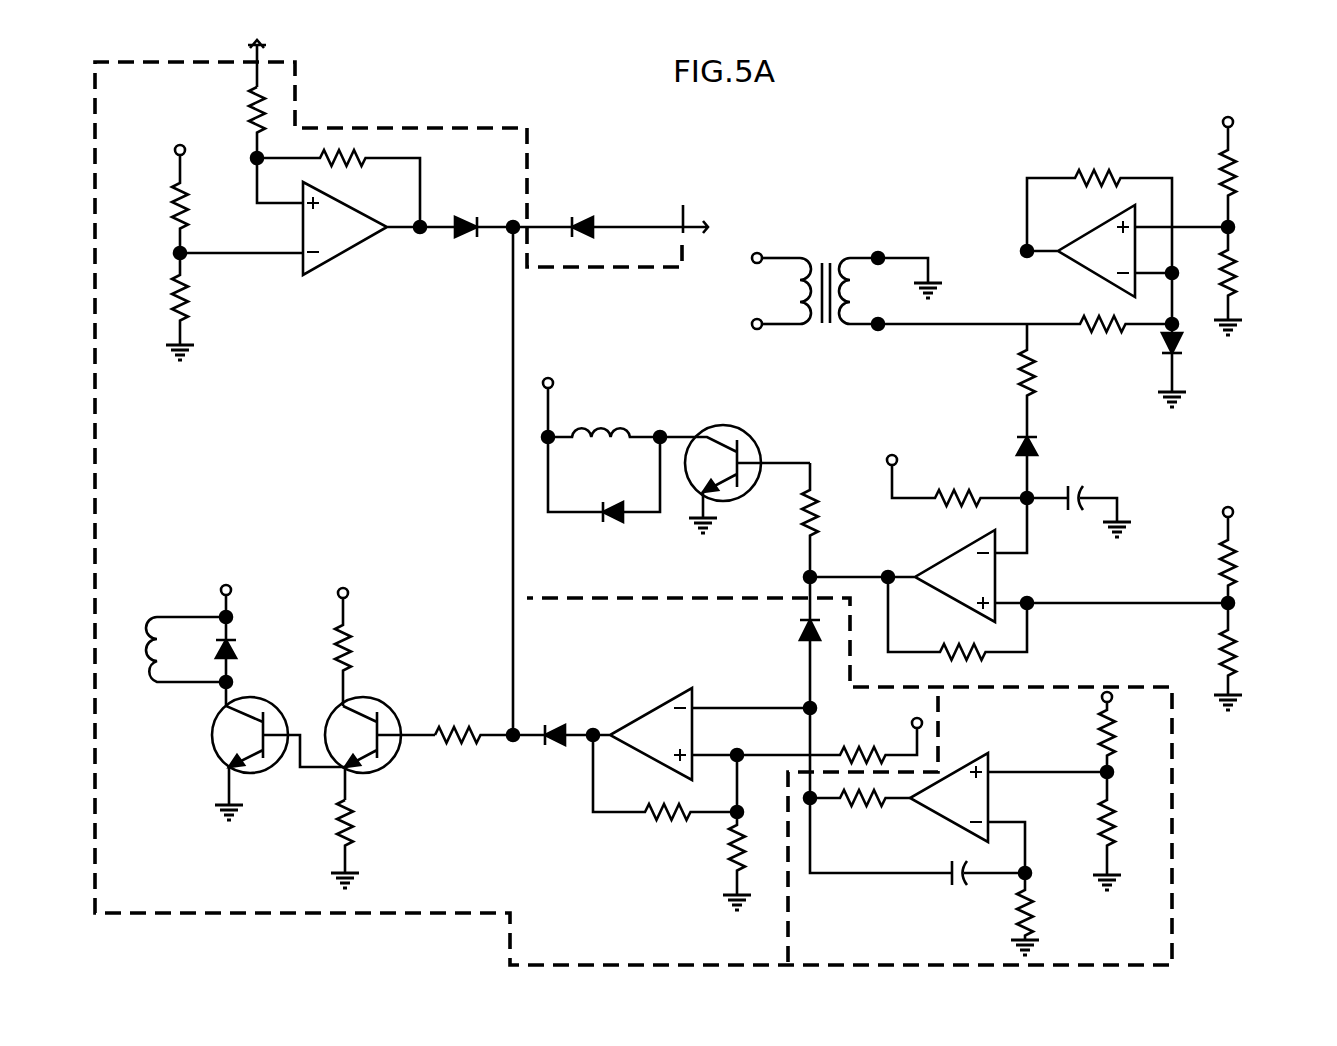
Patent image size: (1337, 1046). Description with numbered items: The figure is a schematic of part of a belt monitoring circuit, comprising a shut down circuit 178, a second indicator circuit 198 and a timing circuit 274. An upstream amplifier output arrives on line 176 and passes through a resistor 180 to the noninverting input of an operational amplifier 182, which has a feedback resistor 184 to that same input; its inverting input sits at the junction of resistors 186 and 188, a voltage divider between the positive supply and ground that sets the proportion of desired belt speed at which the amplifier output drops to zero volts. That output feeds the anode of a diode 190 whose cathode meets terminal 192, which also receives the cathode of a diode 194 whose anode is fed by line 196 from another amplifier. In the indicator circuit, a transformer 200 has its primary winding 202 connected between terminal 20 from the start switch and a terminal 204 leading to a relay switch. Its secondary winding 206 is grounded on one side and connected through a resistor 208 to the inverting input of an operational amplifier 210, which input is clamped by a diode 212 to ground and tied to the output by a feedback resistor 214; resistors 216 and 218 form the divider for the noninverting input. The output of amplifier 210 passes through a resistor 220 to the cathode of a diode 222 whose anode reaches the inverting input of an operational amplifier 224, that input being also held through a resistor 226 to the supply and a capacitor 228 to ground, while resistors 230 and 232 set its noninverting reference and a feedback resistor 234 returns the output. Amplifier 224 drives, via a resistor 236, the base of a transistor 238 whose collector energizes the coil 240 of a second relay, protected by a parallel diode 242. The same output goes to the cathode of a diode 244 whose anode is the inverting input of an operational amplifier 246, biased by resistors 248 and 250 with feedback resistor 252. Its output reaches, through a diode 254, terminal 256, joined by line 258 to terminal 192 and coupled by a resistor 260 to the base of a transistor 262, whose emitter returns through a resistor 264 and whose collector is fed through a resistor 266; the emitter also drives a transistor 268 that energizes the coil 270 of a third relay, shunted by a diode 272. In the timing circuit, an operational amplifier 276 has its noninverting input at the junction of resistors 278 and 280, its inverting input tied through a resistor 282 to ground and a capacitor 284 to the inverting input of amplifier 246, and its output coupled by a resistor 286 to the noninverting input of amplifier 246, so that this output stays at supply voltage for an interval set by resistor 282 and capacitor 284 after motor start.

The terminal 20 is at (752, 325).
The line 176 is at (255, 52).
The shut down circuit 178 is at (356, 130).
The resistor 180 is at (255, 110).
The operational amplifier 182 is at (340, 262).
The feedback resistor 184 is at (355, 158).
The resistor 186 is at (178, 200).
The resistor 188 is at (178, 298).
The diode 190 is at (465, 218).
The terminal 192 is at (513, 225).
The diode 194 is at (585, 217).
The line 196 is at (637, 225).
The second indicator circuit 198 is at (652, 318).
The transformer 200 is at (811, 262).
The primary winding 202 is at (795, 290).
The terminal 204 is at (760, 252).
The secondary winding 206 is at (829, 263).
The resistor 208 is at (1100, 326).
The operational amplifier 210 is at (1078, 238).
The diode 212 is at (1182, 342).
The feedback resistor 214 is at (1098, 178).
The resistor 216 is at (1238, 180).
The resistor 218 is at (1238, 262).
The resistor 220 is at (1040, 385).
The diode 222 is at (1040, 450).
The operational amplifier 224 is at (942, 585).
The resistor 226 is at (955, 493).
The capacitor 228 is at (1075, 508).
The resistor 230 is at (1235, 550).
The resistor 232 is at (1236, 648).
The feedback resistor 234 is at (985, 655).
The resistor 236 is at (822, 505).
The transistor 238 is at (735, 495).
The coil 240 is at (592, 440).
The diode 242 is at (615, 525).
The diode 244 is at (800, 628).
The operational amplifier 246 is at (640, 714).
The resistor 248 is at (858, 752).
The resistor 250 is at (735, 850).
The feedback resistor 252 is at (648, 818).
The diode 254 is at (558, 728).
The terminal 256 is at (513, 748).
The line 258 is at (512, 645).
The resistor 260 is at (458, 728).
The transistor 262 is at (330, 770).
The resistor 264 is at (355, 815).
The resistor 266 is at (350, 630).
The transistor 268 is at (212, 748).
The coil 270 is at (158, 635).
The diode 272 is at (243, 645).
The timing circuit 274 is at (788, 926).
The operational amplifier 276 is at (990, 785).
The resistor 278 is at (1100, 745).
The resistor 280 is at (1113, 822).
The resistor 282 is at (1040, 908).
The capacitor 284 is at (945, 882).
The resistor 286 is at (845, 805).